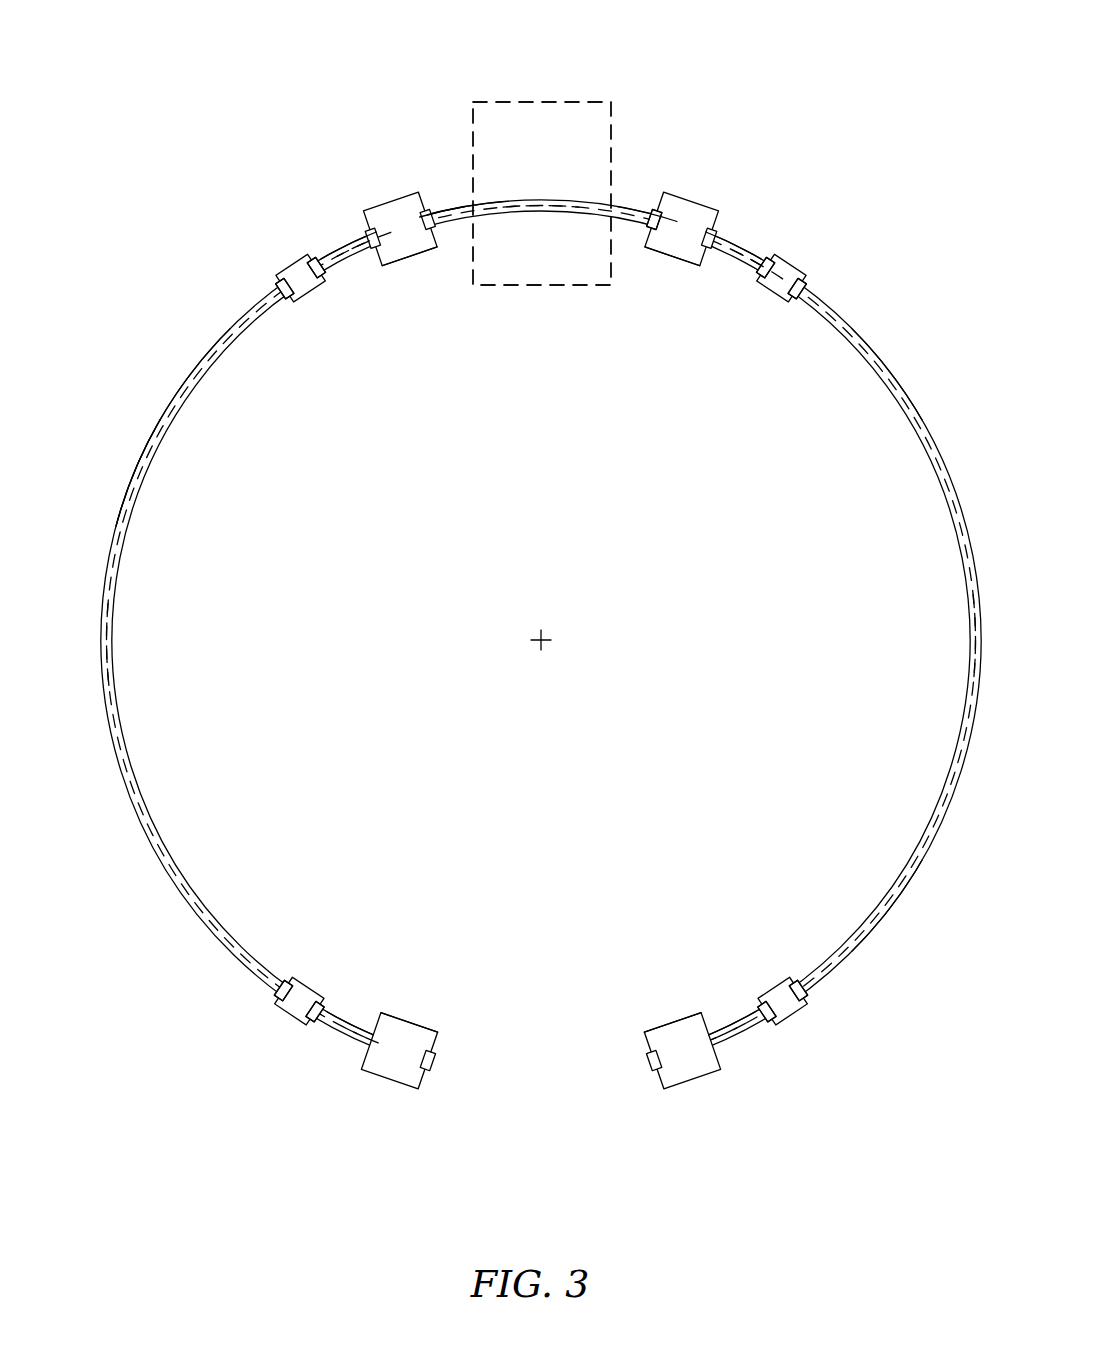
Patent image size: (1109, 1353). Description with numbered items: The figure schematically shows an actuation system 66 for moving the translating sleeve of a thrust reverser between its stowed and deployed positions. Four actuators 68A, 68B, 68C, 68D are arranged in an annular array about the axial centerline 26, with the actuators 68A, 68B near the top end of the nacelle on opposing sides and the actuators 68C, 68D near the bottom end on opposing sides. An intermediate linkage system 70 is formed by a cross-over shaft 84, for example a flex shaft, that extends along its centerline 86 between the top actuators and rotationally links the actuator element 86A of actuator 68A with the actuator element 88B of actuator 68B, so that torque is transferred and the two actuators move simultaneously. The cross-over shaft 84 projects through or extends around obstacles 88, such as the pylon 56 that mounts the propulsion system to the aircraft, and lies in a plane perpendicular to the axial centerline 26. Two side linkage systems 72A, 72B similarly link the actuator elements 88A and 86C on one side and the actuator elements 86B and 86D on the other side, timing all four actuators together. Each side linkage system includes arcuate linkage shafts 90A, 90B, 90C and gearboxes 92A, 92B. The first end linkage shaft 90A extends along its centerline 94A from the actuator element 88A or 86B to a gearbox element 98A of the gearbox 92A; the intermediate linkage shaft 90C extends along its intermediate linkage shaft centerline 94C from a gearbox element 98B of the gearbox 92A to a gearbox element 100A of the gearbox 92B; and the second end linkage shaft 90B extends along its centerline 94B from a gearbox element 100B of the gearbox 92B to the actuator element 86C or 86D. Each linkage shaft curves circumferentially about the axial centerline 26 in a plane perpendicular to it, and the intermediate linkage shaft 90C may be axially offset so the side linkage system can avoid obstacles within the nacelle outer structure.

The axial centerline 26 is at (543, 641).
The pylon 56 is at (527, 100).
The obstacles 88 is at (542, 193).
The actuation system 66 is at (870, 133).
The actuator 68A is at (397, 196).
The actuator 68B is at (690, 198).
The actuator 68C is at (400, 1085).
The actuator 68D is at (688, 1086).
The intermediate linkage system 70 is at (629, 188).
The side linkage system 72A is at (162, 365).
The side linkage system 72B is at (922, 365).
The cross-over shaft 84 is at (455, 207).
The centerline 86 is at (541, 204).
The actuator element 86A is at (441, 226).
The actuator element 86B is at (693, 262).
The actuator element 86C is at (404, 1018).
The actuator element 86D is at (695, 1016).
The actuator element 88A is at (391, 262).
The actuator element 88B is at (654, 231).
The first end linkage shaft 90A is at (345, 251).
The second end linkage shaft 90B is at (350, 1030).
The intermediate linkage shaft 90C is at (119, 515).
The gearbox 92A is at (288, 258).
The gearbox 92B is at (283, 1025).
The centerline 94A is at (353, 284).
The centerline 94B is at (366, 998).
The intermediate linkage shaft centerline 94C is at (103, 594).
The gearbox element 98A is at (319, 262).
The gearbox element 98B is at (283, 289).
The gearbox element 100A is at (283, 989).
The gearbox element 100B is at (317, 1017).